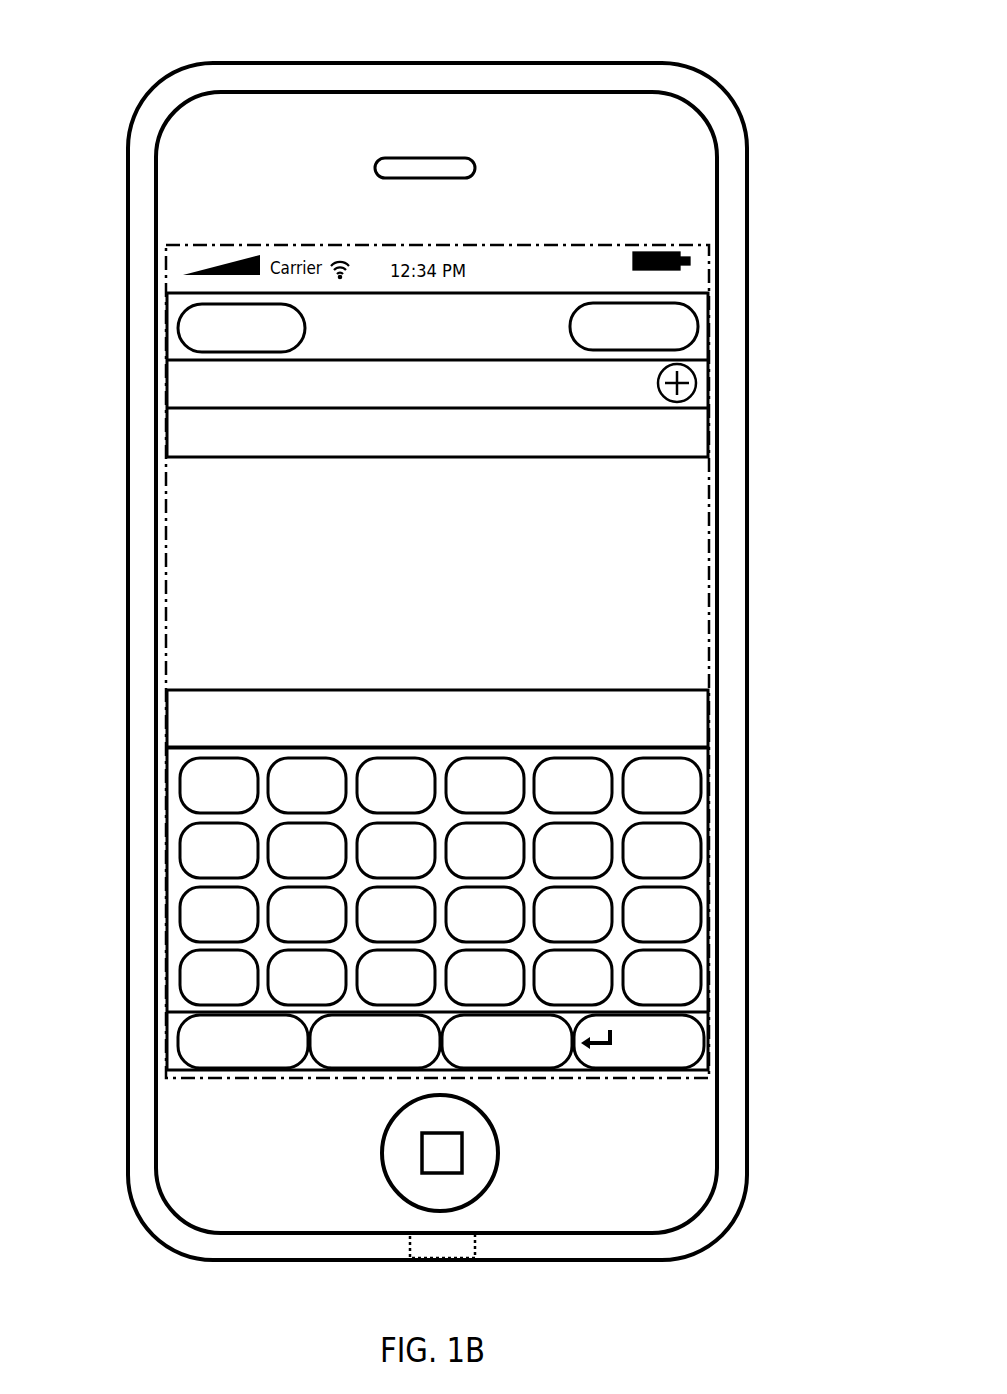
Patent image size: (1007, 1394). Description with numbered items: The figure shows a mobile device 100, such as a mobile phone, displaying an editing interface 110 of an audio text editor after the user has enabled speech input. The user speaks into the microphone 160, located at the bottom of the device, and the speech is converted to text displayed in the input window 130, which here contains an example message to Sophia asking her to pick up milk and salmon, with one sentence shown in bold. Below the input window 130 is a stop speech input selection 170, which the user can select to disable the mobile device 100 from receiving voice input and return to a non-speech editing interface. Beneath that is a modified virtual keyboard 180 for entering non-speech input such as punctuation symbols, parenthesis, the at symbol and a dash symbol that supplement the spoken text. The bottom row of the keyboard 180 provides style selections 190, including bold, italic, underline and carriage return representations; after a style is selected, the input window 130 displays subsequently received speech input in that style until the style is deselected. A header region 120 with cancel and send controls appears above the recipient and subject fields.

The mobile device 100 is at (522, 63).
The editing interface 110 is at (640, 245).
The message header area 120 is at (513, 323).
The input window 130 is at (673, 557).
The microphone 160 is at (475, 1248).
The stop speech input selection 170 is at (203, 710).
The modified virtual keyboard 180 is at (698, 757).
The style selections 190 is at (715, 1040).